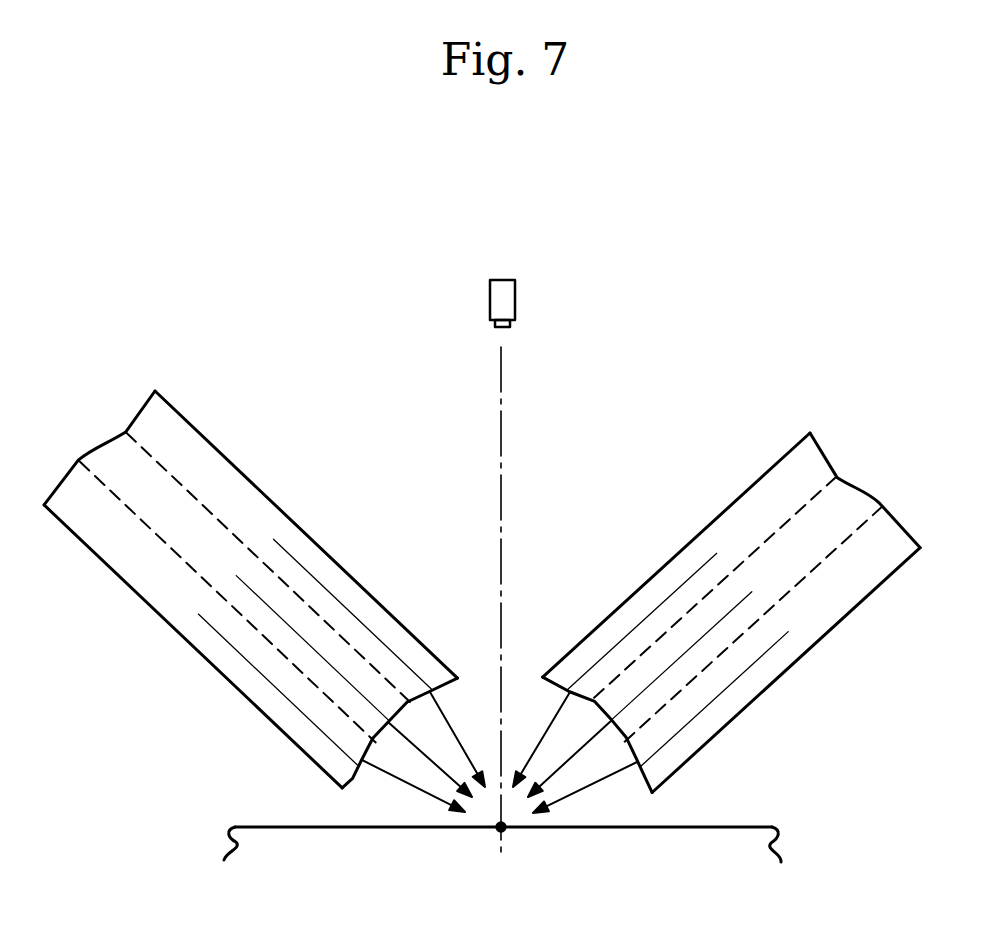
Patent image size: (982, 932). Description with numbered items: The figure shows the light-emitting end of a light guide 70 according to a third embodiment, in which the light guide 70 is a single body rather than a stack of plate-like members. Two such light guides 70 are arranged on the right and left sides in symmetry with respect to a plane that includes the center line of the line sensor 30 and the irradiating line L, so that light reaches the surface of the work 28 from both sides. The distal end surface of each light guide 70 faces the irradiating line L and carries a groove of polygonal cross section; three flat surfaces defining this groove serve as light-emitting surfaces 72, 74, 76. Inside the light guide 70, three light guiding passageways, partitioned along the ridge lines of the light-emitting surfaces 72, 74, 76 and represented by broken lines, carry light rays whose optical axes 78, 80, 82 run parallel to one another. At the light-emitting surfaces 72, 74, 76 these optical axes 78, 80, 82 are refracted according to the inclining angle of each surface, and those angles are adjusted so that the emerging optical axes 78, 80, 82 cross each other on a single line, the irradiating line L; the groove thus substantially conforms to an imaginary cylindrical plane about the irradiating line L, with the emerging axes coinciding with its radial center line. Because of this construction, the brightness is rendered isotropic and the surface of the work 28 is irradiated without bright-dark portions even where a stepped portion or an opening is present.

The work 28 is at (750, 827).
The line sensor 30 is at (515, 297).
The light guide 70 is at (234, 446).
The light-emitting surface 72 is at (455, 684).
The light-emitting surface 74 is at (386, 737).
The light-emitting surface 76 is at (358, 777).
The optical axis 78 is at (310, 570).
The optical axis 80 is at (343, 673).
The optical axis 82 is at (277, 697).
The irradiating line L is at (506, 830).